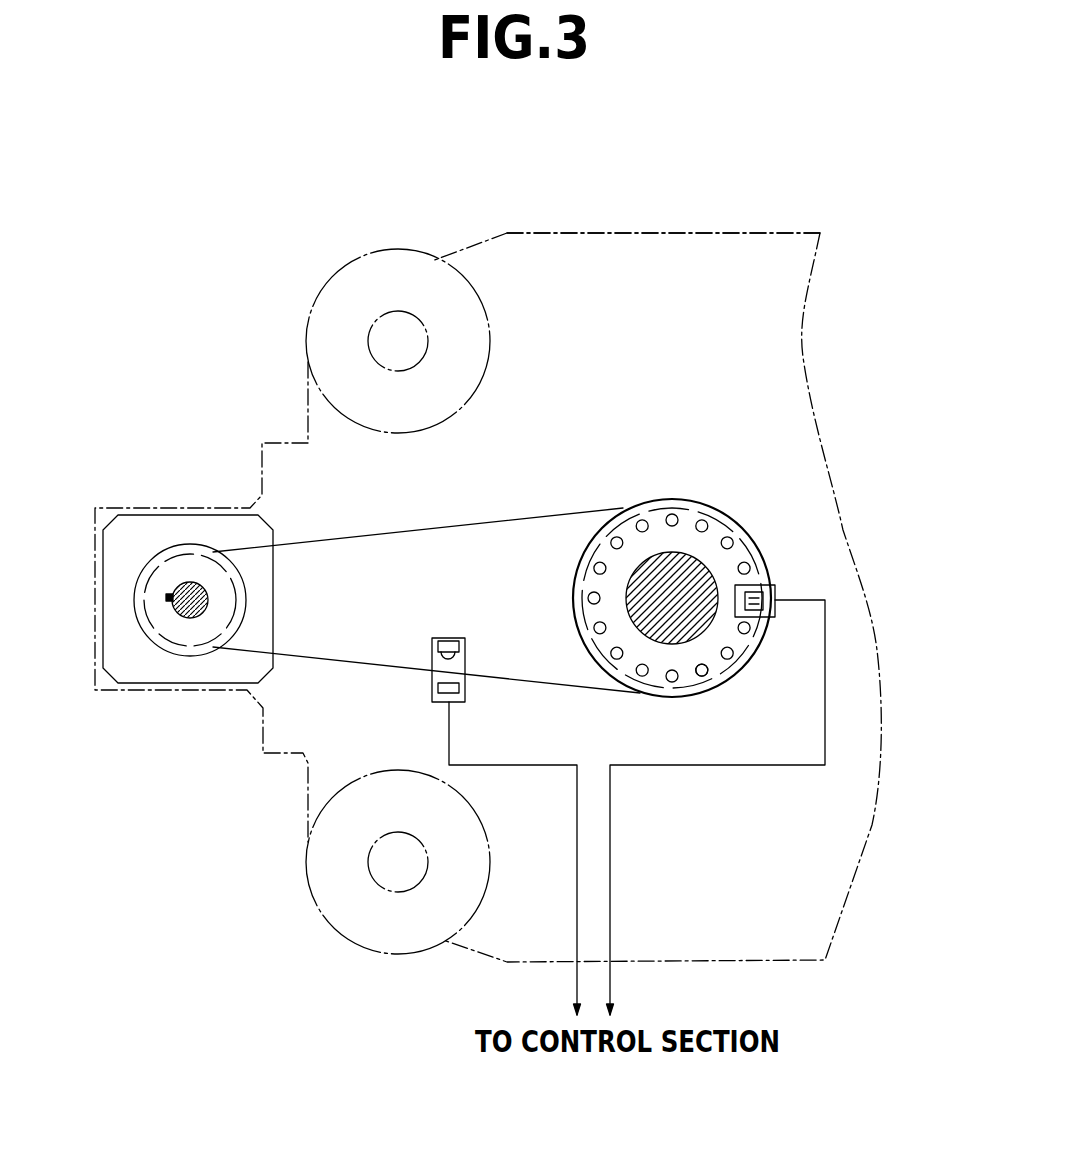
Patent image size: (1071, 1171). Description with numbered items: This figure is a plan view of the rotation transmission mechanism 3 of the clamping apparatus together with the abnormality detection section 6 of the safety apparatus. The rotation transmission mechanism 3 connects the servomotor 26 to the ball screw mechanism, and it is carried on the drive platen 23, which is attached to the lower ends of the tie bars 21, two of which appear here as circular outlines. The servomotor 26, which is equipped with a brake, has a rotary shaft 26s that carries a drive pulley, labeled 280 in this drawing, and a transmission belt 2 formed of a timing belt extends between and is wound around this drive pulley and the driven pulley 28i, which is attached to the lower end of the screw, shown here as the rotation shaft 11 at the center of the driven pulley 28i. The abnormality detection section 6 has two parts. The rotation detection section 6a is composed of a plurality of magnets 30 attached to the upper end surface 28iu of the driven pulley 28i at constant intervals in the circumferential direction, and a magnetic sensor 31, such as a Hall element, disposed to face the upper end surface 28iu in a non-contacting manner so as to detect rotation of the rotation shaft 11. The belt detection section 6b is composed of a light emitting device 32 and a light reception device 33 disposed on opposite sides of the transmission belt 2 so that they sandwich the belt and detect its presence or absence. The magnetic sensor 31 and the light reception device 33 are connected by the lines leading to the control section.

The transmission belt 2 is at (508, 520).
The rotation transmission mechanism 3 is at (310, 683).
The abnormality detection section 6 is at (822, 393).
The rotation detection section 6a is at (800, 580).
The belt detection section 6b is at (488, 690).
The rotation shaft 11 is at (693, 553).
The tie bars 21 is at (370, 332).
The drive platen 23 is at (592, 233).
The servomotor 26 is at (140, 513).
The rotary shaft 26s is at (185, 582).
The driven pulley 28i is at (664, 499).
The upper end surface 28iu is at (702, 676).
The magnets 30 is at (733, 545).
The magnetic sensor 31 is at (764, 636).
The light emitting device 32 is at (432, 652).
The light reception device 33 is at (433, 687).
The motor pulley 280 is at (160, 647).